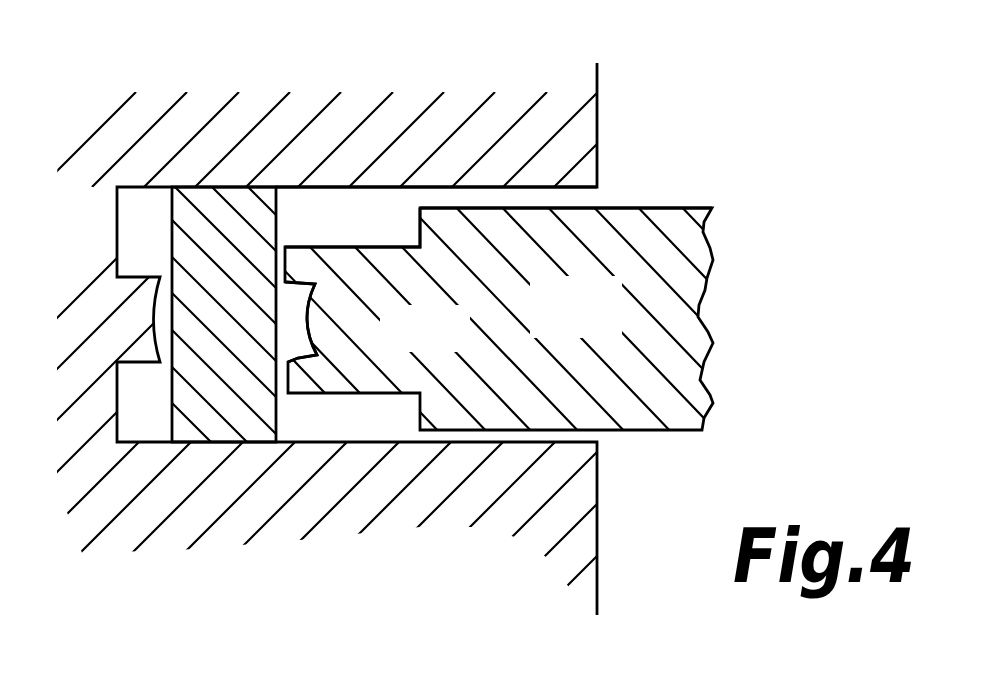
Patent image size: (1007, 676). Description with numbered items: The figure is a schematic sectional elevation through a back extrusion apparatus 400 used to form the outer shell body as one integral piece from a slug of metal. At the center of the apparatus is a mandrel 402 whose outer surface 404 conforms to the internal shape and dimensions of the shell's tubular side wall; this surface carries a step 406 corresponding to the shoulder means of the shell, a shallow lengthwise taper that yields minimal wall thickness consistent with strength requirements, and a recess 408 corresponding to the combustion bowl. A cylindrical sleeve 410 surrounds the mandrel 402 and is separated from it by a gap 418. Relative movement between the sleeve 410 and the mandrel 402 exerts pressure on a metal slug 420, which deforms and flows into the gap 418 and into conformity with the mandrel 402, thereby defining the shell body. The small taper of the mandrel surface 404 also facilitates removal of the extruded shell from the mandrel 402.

The back extrusion apparatus 400 is at (483, 328).
The mandrel 402 is at (620, 328).
The outer surface 404 is at (668, 207).
The step 406 is at (425, 230).
The recess 408 is at (302, 338).
The cylindrical sleeve 410 is at (338, 184).
The gap 418 is at (492, 193).
The metal slug 420 is at (213, 217).